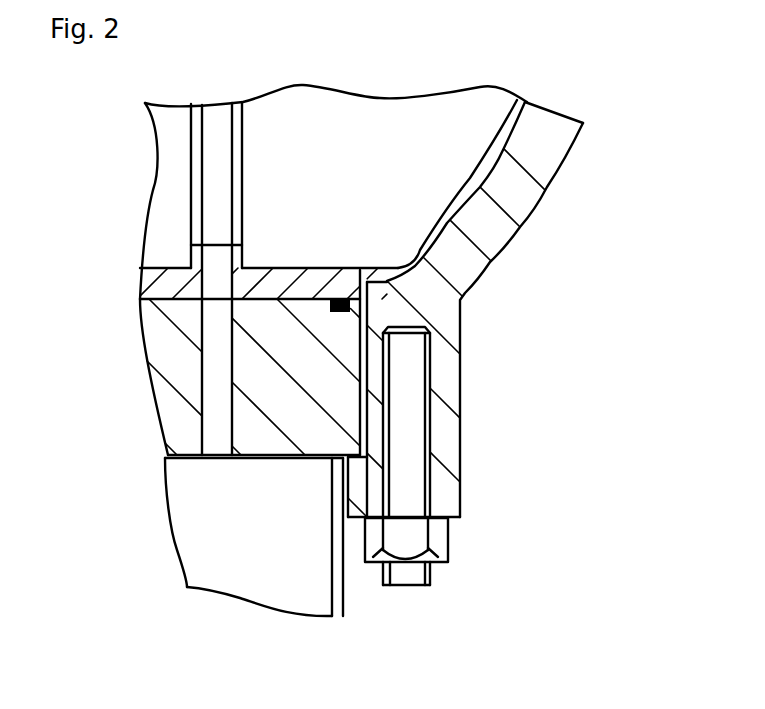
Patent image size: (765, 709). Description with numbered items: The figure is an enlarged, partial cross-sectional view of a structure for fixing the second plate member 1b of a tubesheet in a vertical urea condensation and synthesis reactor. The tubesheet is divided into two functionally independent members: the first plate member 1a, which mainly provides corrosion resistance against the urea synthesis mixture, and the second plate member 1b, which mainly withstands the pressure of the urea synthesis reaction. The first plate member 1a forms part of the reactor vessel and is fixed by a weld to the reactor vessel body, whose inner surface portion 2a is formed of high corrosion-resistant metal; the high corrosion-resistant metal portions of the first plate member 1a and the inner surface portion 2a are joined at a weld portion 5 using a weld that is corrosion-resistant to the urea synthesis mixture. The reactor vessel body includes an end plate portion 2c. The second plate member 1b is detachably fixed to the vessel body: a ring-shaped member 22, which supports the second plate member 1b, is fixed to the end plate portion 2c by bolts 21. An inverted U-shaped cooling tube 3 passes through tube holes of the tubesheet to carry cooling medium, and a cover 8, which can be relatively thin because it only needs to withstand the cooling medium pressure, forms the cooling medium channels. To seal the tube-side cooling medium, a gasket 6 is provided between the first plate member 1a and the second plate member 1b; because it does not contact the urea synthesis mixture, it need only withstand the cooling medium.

The cooling tube 3 is at (245, 122).
The first plate member 1a is at (140, 290).
The second plate member 1b is at (142, 357).
The weld portion 5 is at (360, 270).
The gasket 6 is at (340, 297).
The inner surface portion 2a is at (463, 190).
The end plate portion 2c is at (530, 205).
The ring-shaped member 22 is at (455, 447).
The bolt 21 is at (433, 577).
The cover 8 is at (345, 610).